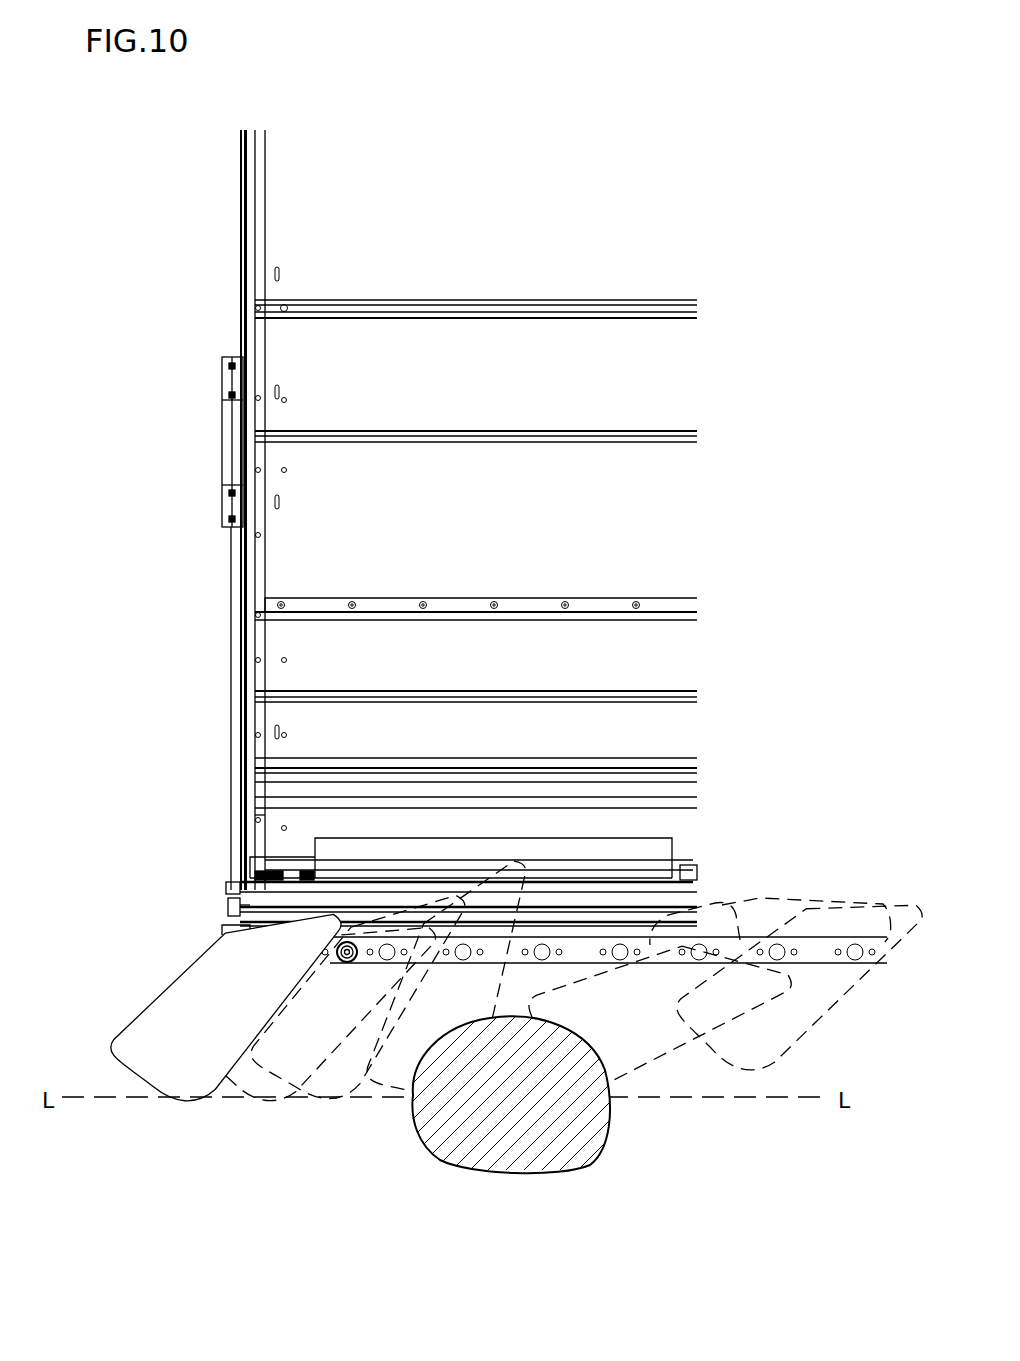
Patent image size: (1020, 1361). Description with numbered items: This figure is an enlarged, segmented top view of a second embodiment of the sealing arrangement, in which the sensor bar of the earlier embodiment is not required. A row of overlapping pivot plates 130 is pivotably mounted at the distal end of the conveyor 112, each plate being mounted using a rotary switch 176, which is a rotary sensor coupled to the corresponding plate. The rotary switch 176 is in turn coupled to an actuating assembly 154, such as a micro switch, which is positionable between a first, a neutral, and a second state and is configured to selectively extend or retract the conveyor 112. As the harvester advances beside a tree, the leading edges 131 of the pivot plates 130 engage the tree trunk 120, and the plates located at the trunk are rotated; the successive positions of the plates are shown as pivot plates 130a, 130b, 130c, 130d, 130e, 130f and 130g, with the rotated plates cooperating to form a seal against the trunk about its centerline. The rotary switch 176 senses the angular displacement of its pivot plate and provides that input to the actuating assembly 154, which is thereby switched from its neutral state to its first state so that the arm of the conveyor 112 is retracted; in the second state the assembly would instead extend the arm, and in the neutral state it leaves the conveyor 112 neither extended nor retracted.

The conveyor 112 is at (175, 283).
The actuating assembly 154 is at (222, 440).
The rotary switch 176 is at (228, 906).
The pivot plate 130 is at (148, 1065).
The leading edge 131 is at (207, 1093).
The pivot plate 130a is at (262, 1085).
The pivot plate 130b is at (338, 1092).
The pivot plate 130c is at (413, 1092).
The pivot plate 130d is at (583, 935).
The pivot plate 130e is at (667, 903).
The pivot plate 130f is at (745, 920).
The pivot plate 130g is at (785, 1015).
The tree trunk 120 is at (583, 1157).